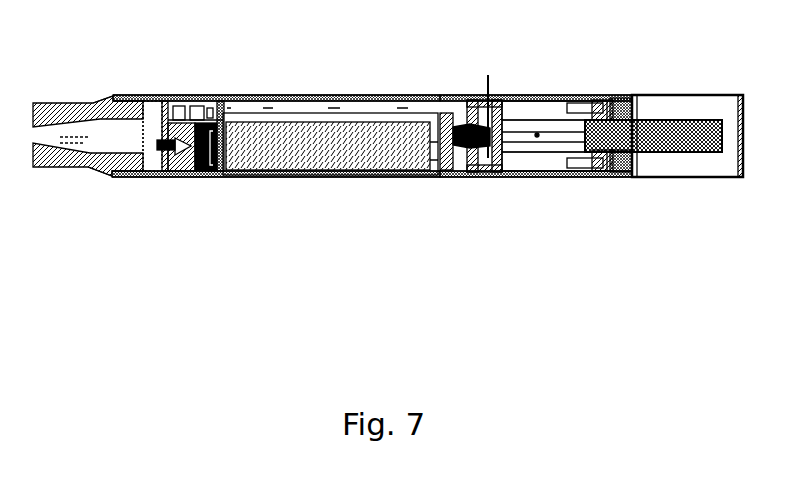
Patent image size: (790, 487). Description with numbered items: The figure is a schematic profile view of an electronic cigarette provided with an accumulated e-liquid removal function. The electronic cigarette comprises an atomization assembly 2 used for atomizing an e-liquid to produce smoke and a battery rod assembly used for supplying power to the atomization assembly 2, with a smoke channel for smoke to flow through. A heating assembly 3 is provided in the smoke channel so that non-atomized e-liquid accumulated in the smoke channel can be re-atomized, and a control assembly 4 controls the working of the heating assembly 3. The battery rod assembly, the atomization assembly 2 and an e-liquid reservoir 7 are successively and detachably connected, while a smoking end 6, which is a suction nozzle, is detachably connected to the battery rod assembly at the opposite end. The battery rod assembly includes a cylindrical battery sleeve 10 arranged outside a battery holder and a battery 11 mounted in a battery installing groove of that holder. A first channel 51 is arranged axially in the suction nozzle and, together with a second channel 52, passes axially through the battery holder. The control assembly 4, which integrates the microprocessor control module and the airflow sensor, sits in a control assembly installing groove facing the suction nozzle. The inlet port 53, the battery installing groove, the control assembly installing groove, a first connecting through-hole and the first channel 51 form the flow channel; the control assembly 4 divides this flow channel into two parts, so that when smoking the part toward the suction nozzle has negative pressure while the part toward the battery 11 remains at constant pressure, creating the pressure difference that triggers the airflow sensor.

The atomization assembly 2 is at (510, 147).
The heating assembly 3 is at (198, 98).
The control assembly 4 is at (195, 160).
The smoking end 6 is at (63, 165).
The e-liquid reservoir 7 is at (707, 167).
The battery sleeve 10 is at (345, 177).
The battery 11 is at (292, 143).
The first channel 51 is at (93, 98).
The second channel 52 is at (268, 98).
The inlet port 53 is at (553, 177).